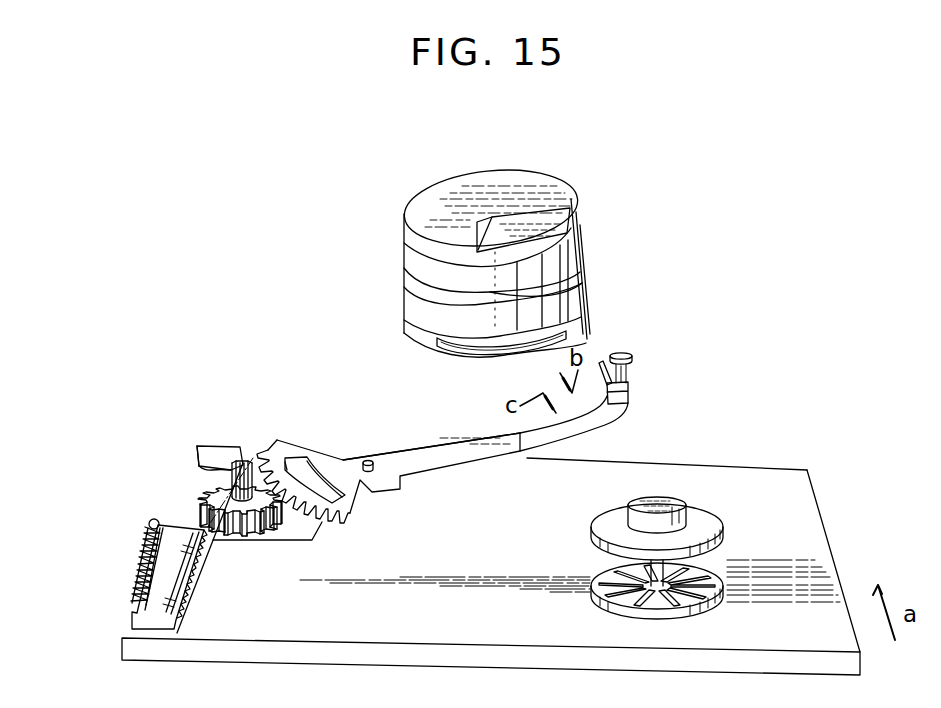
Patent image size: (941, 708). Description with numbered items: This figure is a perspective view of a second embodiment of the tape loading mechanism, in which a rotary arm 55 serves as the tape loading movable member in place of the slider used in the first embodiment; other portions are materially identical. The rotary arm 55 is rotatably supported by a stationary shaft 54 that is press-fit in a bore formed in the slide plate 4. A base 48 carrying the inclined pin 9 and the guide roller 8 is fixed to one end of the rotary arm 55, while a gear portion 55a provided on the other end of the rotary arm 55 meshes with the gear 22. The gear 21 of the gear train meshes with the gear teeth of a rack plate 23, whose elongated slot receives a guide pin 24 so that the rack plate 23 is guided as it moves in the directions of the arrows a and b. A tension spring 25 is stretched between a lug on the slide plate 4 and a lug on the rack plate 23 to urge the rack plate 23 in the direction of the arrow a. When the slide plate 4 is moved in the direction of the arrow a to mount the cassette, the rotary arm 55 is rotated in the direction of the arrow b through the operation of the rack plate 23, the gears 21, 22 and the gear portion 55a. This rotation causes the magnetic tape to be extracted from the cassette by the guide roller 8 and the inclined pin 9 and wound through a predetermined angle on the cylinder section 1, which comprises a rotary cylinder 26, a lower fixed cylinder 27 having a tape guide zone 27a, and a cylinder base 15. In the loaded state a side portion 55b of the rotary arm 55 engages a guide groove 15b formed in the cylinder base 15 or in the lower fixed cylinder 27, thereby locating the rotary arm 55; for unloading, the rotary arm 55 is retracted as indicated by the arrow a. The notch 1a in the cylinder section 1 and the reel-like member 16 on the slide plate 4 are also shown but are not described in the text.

The cylinder section 1 is at (496, 256).
The notch in drum 1a is at (540, 232).
The slide plate 4 is at (722, 642).
The guide roller 8 is at (632, 355).
The inclined pin 9 is at (601, 362).
The cylinder base 15 is at (462, 346).
The guide groove 15b is at (455, 349).
The spool 16 is at (690, 500).
The gear 21 is at (248, 461).
The gear 22 is at (255, 528).
The rack plate 23 is at (205, 448).
The guide pin 24 is at (188, 530).
The tension spring 25 is at (135, 565).
The rotary cylinder 26 is at (406, 258).
The lower fixed cylinder 27 is at (406, 300).
The tape guide zone 27a is at (582, 280).
The base 48 is at (630, 393).
The stationary shaft 54 is at (366, 462).
The rotary arm 55 is at (442, 477).
The gear portion 55a is at (340, 525).
The side portion 55b is at (452, 440).